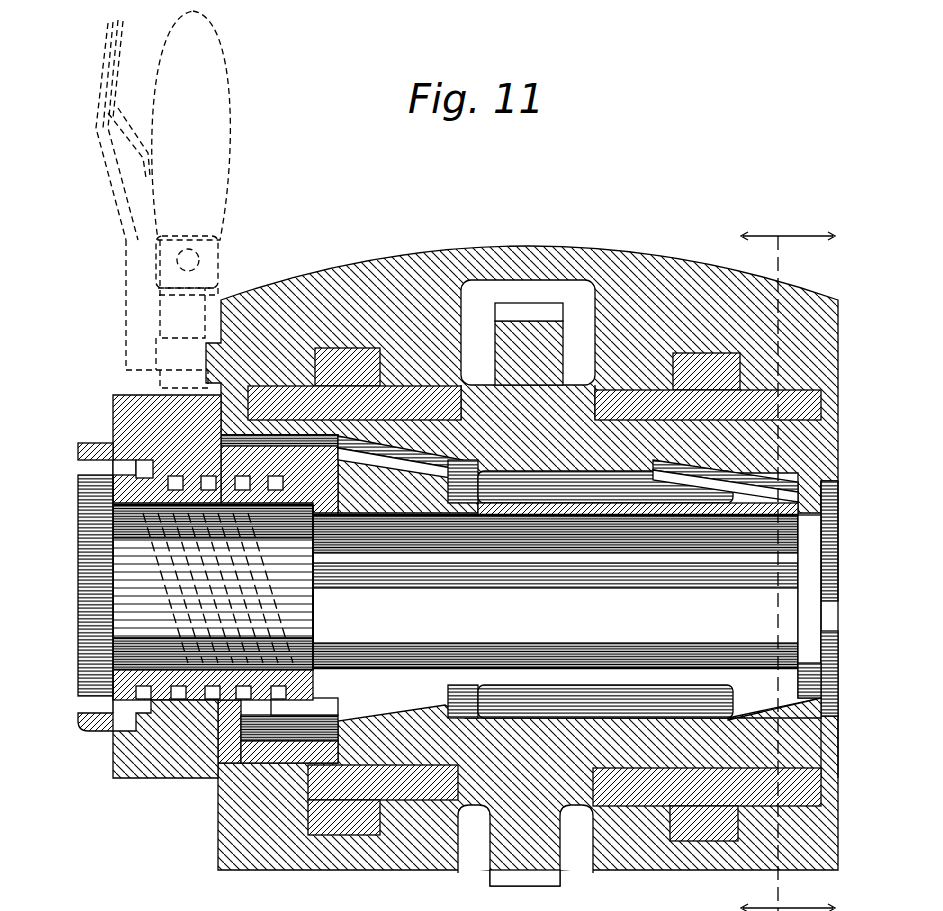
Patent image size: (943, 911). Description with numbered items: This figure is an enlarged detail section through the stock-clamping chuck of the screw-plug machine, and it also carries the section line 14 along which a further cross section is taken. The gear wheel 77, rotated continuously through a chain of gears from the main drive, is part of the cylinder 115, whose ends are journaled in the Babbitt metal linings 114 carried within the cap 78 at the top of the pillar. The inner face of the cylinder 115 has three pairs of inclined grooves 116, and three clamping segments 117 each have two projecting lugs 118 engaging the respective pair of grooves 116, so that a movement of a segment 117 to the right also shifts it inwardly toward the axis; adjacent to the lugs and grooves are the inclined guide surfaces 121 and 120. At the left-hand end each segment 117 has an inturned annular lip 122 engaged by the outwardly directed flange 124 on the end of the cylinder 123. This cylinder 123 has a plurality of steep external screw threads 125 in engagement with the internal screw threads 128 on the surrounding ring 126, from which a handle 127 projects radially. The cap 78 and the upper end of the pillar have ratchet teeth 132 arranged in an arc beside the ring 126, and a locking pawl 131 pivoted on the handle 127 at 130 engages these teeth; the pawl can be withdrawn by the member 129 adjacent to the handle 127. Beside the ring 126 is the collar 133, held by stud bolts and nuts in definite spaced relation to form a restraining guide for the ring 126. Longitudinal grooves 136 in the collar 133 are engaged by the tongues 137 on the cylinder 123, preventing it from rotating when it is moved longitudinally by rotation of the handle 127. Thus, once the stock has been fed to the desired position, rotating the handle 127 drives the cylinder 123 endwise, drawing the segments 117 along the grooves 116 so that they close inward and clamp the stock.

The section line 14 is at (788, 559).
The gear wheel 77 is at (513, 312).
The cap 78 is at (648, 272).
The Babbitt metal linings 114 is at (325, 352).
The cylinder 115 is at (535, 469).
The inclined grooves 116 is at (725, 482).
The clamping segments 117 is at (600, 525).
The projecting lugs 118 is at (815, 500).
The inclined guide surface 120 is at (800, 690).
The inclined guide surface 121 is at (755, 685).
The inturned annular lip 122 is at (240, 480).
The cylinder 123 is at (276, 640).
The outwardly directed flange 124 is at (300, 510).
The external screw threads 125 is at (475, 724).
The ring 126 is at (182, 772).
The handle 127 is at (222, 106).
The internal screw threads 128 is at (165, 705).
The member 129 is at (92, 60).
The pivot 130 is at (193, 254).
The locking pawl 131 is at (130, 352).
The ratchet teeth 132 is at (232, 305).
The collar 133 is at (105, 772).
The longitudinal grooves 136 is at (85, 462).
The tongues 137 is at (115, 455).